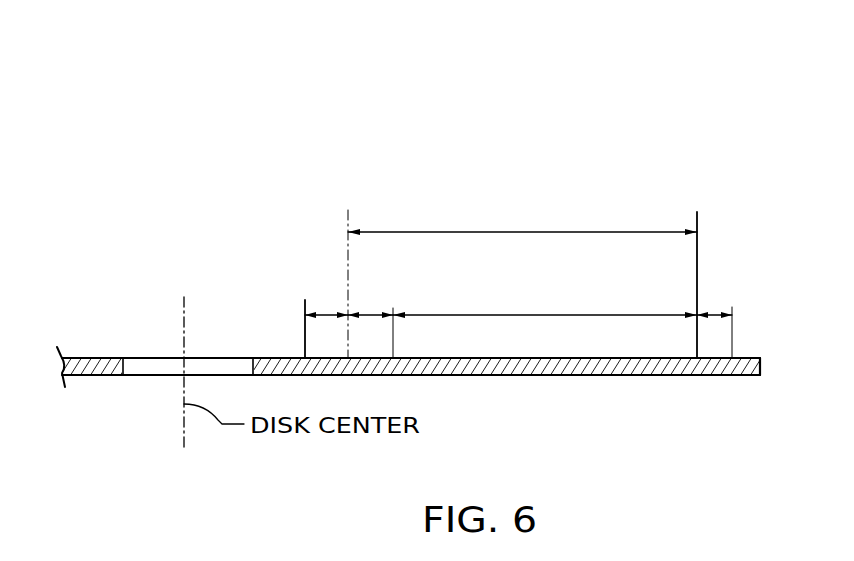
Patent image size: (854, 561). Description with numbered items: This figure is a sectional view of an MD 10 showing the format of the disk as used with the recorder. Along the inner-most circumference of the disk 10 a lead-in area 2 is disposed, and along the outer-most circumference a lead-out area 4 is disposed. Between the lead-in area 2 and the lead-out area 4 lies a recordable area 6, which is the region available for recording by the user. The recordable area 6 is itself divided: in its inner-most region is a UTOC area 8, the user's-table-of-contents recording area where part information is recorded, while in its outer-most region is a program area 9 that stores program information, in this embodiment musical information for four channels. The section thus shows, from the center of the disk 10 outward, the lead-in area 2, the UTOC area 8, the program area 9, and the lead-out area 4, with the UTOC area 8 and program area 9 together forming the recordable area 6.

The lead-in area 2 is at (328, 313).
The lead-out area 4 is at (720, 312).
The recordable area 6 is at (443, 230).
The UTOC area 8 is at (370, 313).
The program area 9 is at (495, 315).
The MD 10 is at (508, 380).